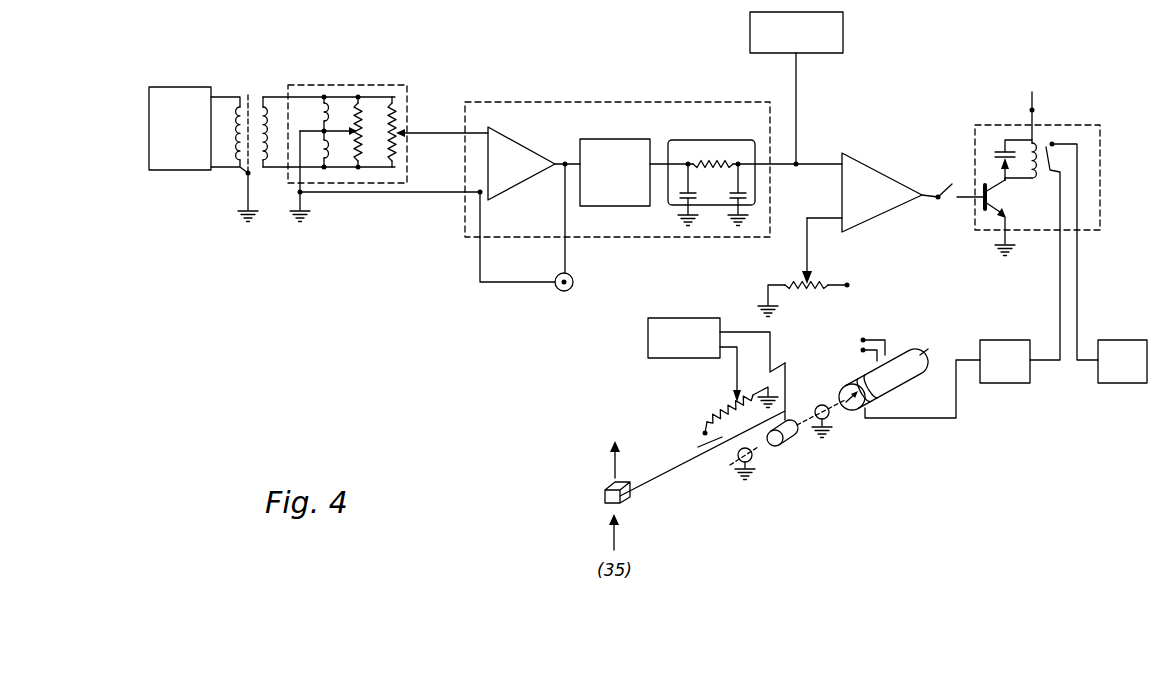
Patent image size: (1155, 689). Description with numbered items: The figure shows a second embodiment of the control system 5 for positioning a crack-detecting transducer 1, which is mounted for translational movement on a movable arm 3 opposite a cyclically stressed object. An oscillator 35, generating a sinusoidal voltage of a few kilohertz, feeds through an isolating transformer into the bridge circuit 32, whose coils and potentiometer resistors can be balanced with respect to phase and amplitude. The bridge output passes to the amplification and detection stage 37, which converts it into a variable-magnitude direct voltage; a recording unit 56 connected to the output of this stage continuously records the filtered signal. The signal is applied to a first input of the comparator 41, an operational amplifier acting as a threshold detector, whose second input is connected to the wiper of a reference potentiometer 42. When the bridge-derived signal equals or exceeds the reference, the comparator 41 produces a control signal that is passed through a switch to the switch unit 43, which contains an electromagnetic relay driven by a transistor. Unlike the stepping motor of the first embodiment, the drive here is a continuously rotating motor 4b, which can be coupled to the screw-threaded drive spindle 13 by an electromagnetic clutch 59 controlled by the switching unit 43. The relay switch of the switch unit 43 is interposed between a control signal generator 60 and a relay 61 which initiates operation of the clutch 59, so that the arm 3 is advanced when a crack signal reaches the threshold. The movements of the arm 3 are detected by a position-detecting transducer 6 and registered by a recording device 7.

The oscillator 35 is at (177, 158).
The bridge circuit 32 is at (377, 75).
The amplification and detection stage 37 is at (601, 86).
The recording unit 56 is at (830, 33).
The comparator 41 is at (875, 203).
The reference potentiometer 42 is at (830, 281).
The switch unit 43 is at (1064, 113).
The recording device 7 is at (648, 335).
The position-detecting transducer 6 is at (723, 410).
The movable arm 3 is at (695, 463).
The crack-detecting transducer 1 is at (622, 504).
The control system 5 is at (613, 450).
The screw-threaded drive spindle 13 is at (763, 447).
The continuously rotating motor 4b is at (902, 365).
The electromagnetic clutch 59 is at (853, 410).
The relay 61 is at (1012, 372).
The control signal generator 60 is at (1123, 372).